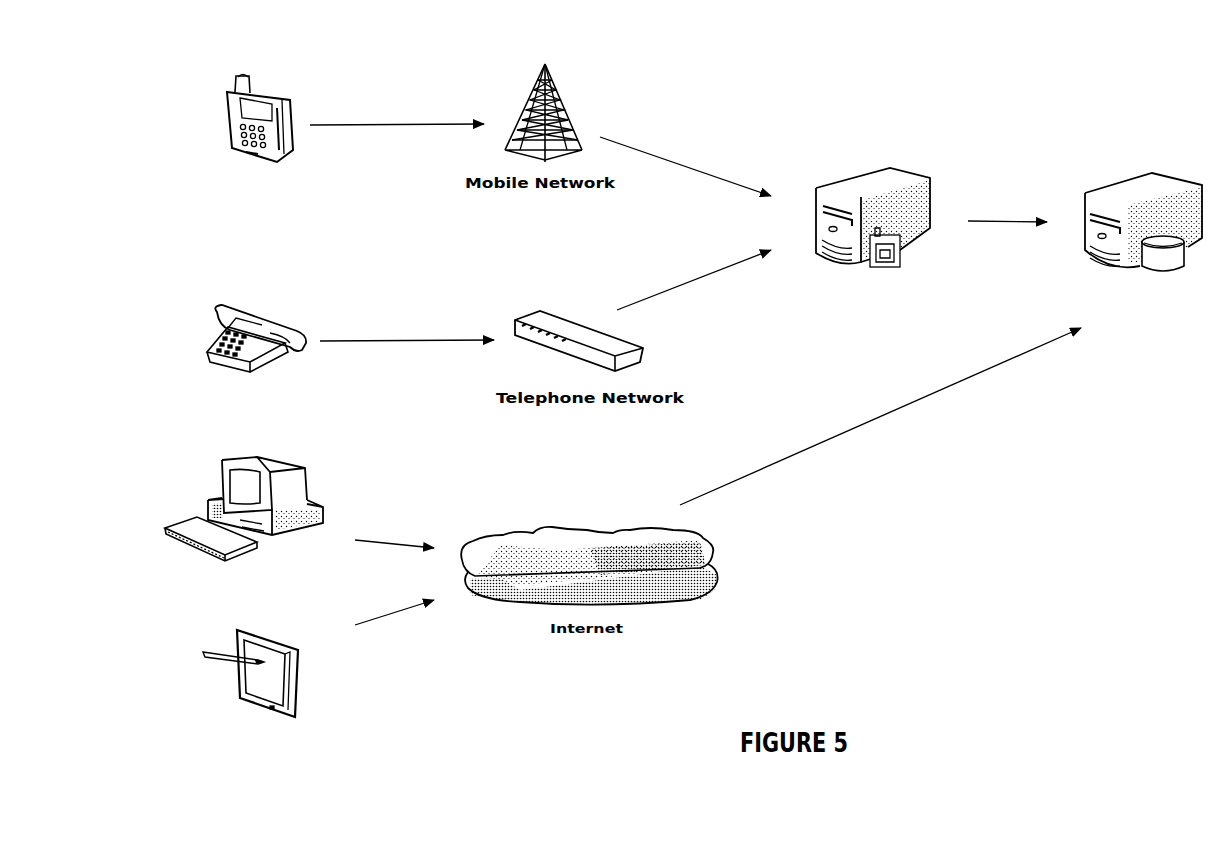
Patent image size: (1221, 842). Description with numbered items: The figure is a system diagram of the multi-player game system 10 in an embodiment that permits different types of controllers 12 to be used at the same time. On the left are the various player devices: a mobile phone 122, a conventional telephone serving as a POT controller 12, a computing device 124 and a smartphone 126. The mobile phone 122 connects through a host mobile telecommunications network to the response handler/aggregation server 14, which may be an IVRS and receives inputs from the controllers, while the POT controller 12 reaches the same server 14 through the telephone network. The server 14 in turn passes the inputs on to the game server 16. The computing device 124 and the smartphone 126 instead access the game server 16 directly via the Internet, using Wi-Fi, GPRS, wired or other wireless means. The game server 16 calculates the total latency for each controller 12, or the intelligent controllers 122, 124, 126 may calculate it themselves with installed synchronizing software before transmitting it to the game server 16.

The system 10 is at (1032, 77).
The mobile phone 122 is at (262, 84).
The response handler/aggregation server 14 is at (862, 172).
The game server 16 is at (1148, 178).
The game controller 12 is at (262, 318).
The computing device 124 is at (288, 465).
The smartphone 126 is at (305, 688).